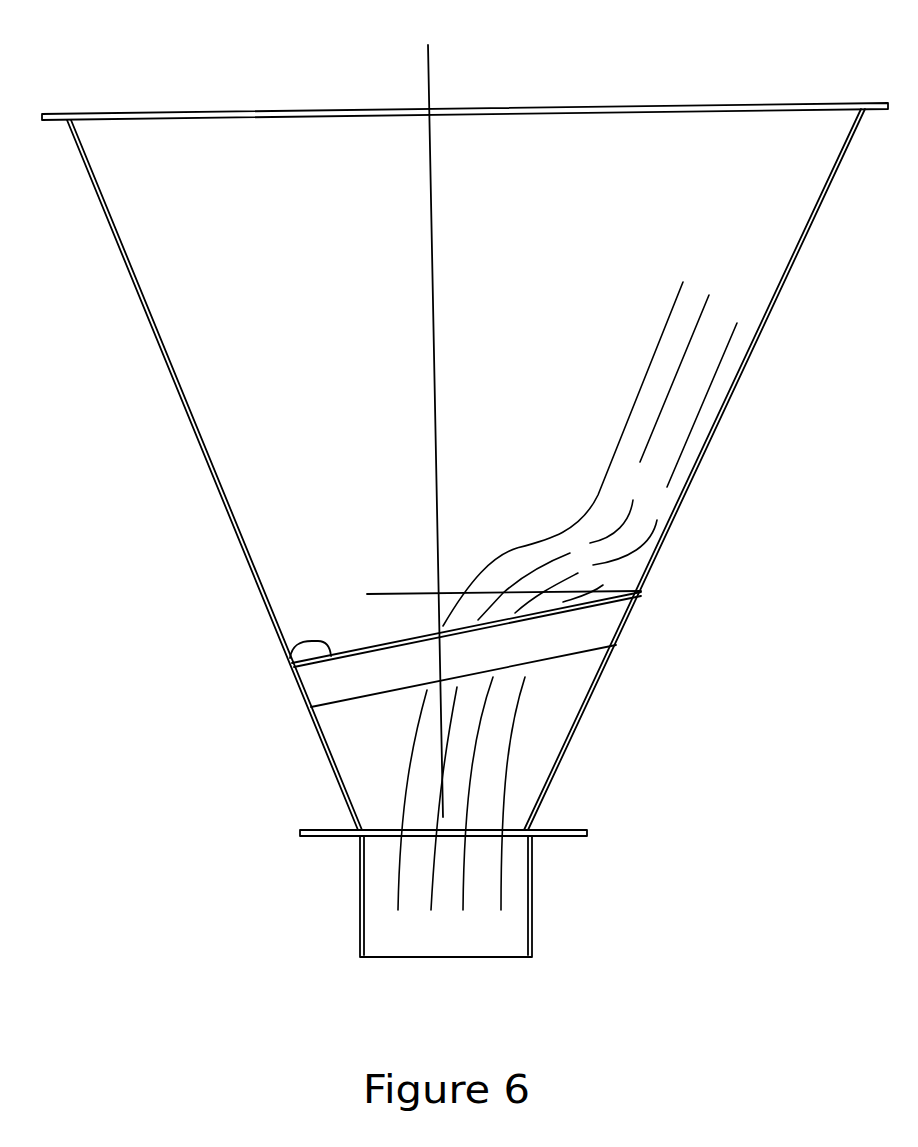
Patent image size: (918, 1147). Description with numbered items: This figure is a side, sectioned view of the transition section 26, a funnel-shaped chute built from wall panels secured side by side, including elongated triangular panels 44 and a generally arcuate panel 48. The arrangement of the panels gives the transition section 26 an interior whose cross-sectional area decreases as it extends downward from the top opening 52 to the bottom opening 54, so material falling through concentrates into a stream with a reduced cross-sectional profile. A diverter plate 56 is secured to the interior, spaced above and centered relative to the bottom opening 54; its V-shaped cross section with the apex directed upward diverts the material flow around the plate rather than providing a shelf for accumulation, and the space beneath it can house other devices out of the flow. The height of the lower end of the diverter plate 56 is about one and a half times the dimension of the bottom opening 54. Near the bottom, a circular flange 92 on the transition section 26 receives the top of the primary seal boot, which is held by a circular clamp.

The top opening 52 is at (657, 104).
The transition section 26 is at (188, 422).
The arcuate panel 48 is at (737, 388).
The elongated triangular panel 44 is at (267, 627).
The diverter plate 56 is at (290, 658).
The circular flange 92 is at (578, 828).
The bottom opening 54 is at (516, 957).